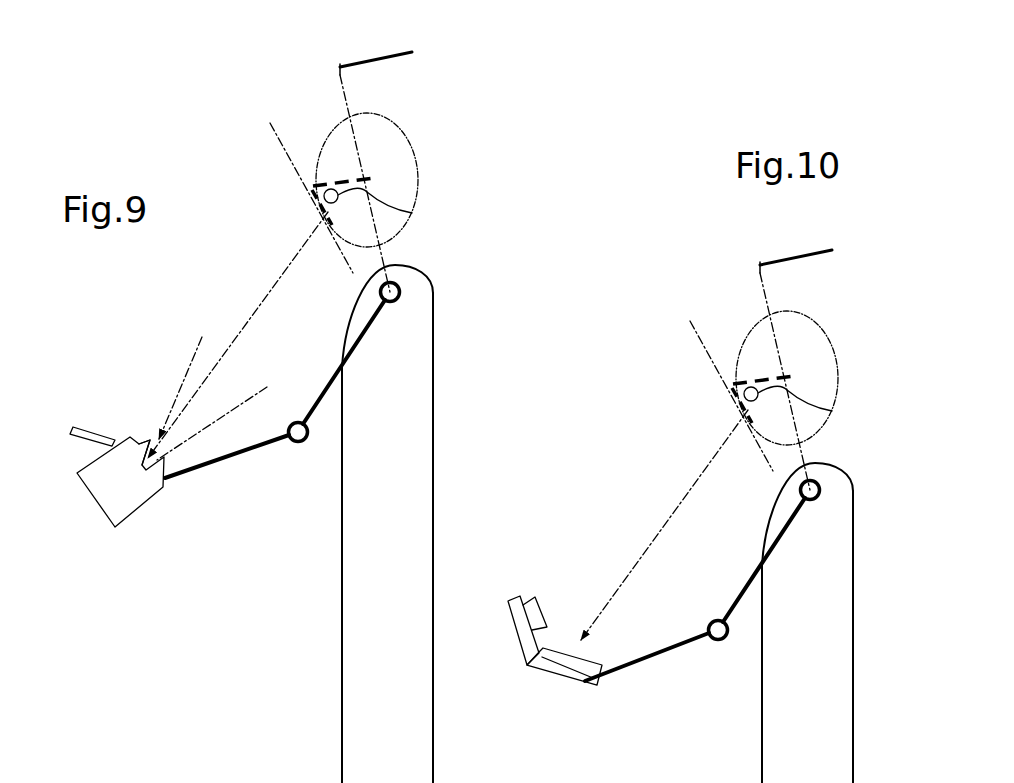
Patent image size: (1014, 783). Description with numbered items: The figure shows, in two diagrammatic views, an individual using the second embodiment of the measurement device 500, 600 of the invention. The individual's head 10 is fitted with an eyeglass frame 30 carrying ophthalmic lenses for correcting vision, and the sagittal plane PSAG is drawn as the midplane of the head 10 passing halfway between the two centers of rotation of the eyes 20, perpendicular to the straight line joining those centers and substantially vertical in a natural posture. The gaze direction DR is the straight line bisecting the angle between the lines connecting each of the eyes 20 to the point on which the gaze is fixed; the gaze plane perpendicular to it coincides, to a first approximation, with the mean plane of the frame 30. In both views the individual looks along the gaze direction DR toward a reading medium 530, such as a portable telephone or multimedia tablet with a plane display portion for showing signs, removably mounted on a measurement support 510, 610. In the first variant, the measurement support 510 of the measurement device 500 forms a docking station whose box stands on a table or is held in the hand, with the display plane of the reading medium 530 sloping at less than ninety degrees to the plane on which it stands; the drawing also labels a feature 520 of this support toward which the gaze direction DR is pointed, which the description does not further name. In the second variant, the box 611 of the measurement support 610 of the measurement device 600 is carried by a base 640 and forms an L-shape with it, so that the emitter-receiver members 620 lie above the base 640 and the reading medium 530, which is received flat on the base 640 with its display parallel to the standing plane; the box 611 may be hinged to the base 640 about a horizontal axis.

In FIG. 9, the head 10 is at (398, 144).
In FIG. 10, the head 10 is at (805, 369).
In FIG. 9, the eyes 20 is at (412, 213).
In FIG. 10, the eyes 20 is at (813, 406).
In FIG. 9, the eyeglass frame 30 is at (342, 177).
In FIG. 10, the eyeglass frame 30 is at (742, 382).
In FIG. 9, the sagittal plane PSAG is at (373, 70).
In FIG. 10, the sagittal plane PSAG is at (749, 360).
In FIG. 9, the gaze direction DR is at (271, 291).
In FIG. 10, the gaze direction DR is at (691, 490).
In FIG. 9, the measurement device 500 is at (98, 374).
In FIG. 9, the measurement support 510 is at (135, 498).
In FIG. 9, the contact notch 520 is at (147, 440).
In FIG. 9, the reading medium 530 is at (83, 433).
In FIG. 10, the reading medium 530 is at (590, 652).
In FIG. 10, the measurement device 600 is at (535, 681).
In FIG. 10, the measurement support 610 is at (522, 665).
In FIG. 10, the box 611 is at (510, 618).
In FIG. 10, the emitter-receiver members 620 is at (538, 602).
In FIG. 10, the base 640 is at (565, 672).